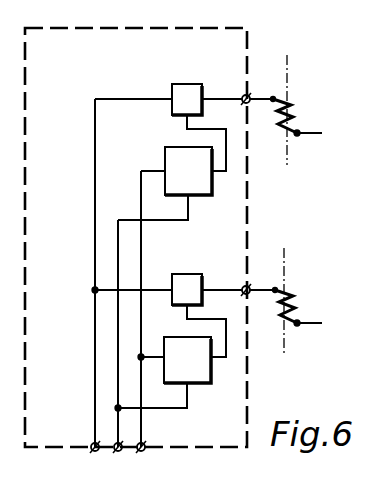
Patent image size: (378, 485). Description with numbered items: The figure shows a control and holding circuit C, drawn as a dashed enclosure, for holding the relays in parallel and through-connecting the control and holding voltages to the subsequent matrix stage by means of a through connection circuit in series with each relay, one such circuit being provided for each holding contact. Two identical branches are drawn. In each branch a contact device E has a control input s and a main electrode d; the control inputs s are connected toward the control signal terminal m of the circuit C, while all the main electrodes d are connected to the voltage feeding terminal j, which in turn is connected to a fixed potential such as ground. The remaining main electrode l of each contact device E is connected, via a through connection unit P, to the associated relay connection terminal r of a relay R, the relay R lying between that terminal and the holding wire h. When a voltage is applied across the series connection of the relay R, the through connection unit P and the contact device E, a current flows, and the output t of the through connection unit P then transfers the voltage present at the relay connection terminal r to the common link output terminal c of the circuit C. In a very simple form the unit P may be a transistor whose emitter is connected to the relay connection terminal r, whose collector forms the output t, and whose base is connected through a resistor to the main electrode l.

The control and holding circuit C is at (250, 205).
The link output terminal c is at (92, 286).
The voltage feeding terminal j is at (115, 348).
The control signal terminal m is at (142, 322).
The through connection unit P is at (194, 84).
The output t is at (170, 97).
The relay connection terminal r is at (238, 186).
The relay R is at (293, 118).
The holding wire h is at (315, 133).
The contact device E is at (198, 197).
The main electrode l is at (212, 178).
The control input s is at (163, 169).
The main electrode d is at (186, 198).